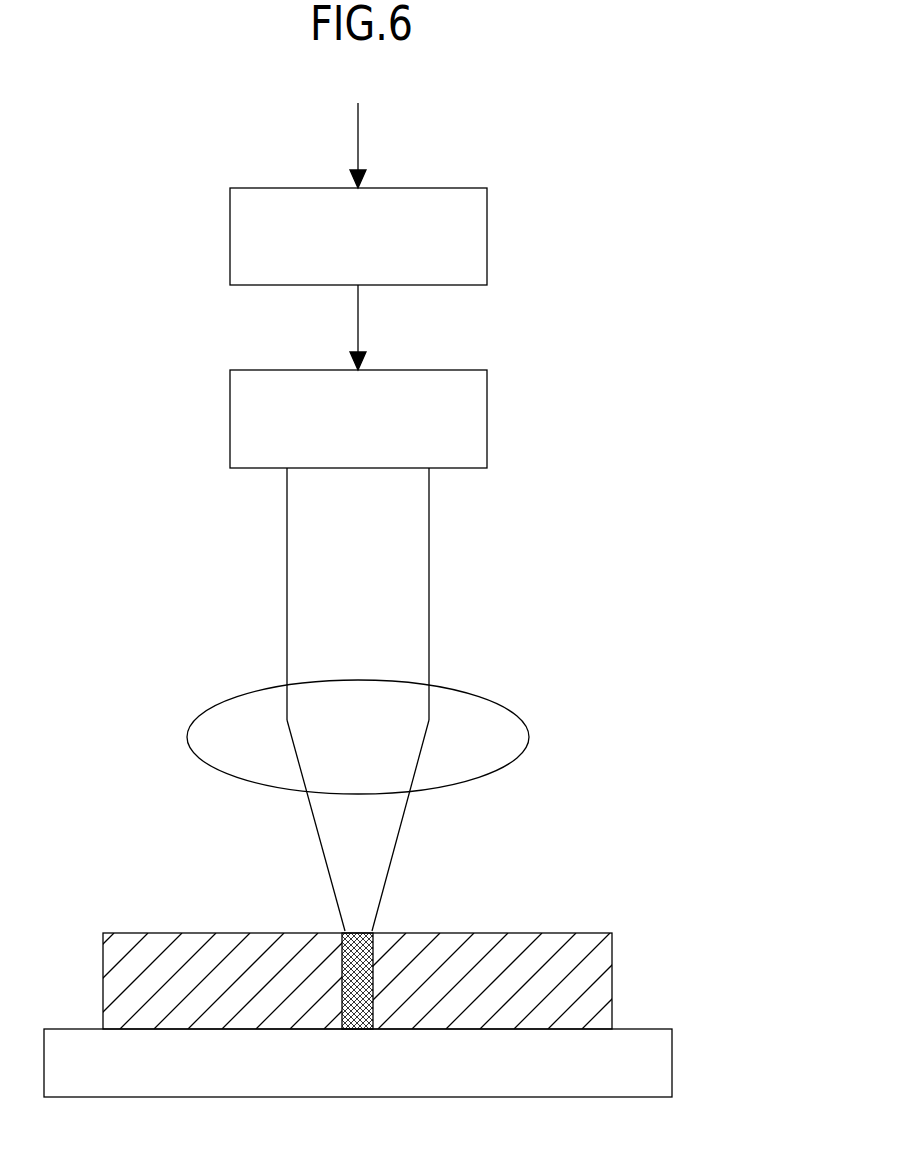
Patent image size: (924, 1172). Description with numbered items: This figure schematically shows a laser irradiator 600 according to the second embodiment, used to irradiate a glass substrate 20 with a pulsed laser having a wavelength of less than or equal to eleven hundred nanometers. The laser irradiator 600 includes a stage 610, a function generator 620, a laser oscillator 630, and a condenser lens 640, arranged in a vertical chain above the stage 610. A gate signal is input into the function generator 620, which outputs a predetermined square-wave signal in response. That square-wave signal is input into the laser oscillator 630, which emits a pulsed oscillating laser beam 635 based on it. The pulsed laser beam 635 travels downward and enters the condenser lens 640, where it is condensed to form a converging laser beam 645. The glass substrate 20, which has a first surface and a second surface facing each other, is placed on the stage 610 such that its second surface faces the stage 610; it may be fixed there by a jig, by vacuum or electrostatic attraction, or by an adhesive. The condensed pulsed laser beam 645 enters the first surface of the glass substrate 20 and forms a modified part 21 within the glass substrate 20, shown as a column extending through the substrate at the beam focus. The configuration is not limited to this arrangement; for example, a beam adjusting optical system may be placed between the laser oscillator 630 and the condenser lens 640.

The laser irradiator 600 is at (148, 147).
The function generator 620 is at (495, 238).
The laser oscillator 630 is at (495, 425).
The pulsed laser beam 635 is at (328, 602).
The condenser lens 640 is at (497, 725).
The laser beam 645 is at (328, 850).
The glass substrate 20 is at (515, 928).
The modified part 21 is at (359, 920).
The stage 610 is at (617, 1043).